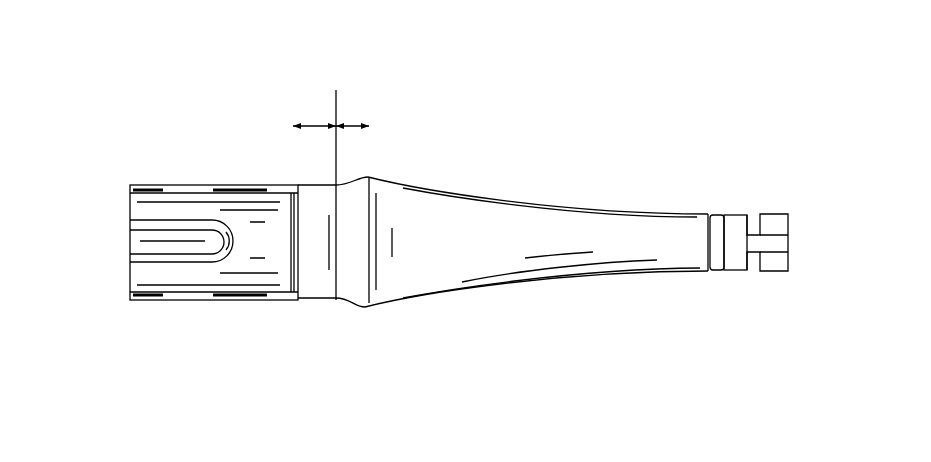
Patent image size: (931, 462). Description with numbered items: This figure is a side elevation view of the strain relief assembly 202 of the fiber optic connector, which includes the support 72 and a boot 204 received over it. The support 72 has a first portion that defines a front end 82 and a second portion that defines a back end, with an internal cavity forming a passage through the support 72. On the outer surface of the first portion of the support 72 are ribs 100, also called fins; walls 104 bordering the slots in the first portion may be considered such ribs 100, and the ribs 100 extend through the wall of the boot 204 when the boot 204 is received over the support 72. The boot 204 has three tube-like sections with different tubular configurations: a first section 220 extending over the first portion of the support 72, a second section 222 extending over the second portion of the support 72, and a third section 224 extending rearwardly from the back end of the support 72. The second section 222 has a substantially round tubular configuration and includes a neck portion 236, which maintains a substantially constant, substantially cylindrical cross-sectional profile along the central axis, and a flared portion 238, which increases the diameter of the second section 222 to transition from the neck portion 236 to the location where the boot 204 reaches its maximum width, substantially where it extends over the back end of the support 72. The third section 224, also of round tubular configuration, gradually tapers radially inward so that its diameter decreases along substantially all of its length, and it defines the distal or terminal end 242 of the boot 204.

The strain relief assembly 202 is at (677, 157).
The first section 220 is at (293, 185).
The second section 222 is at (369, 178).
The third section 224 is at (510, 202).
The boot 204 is at (535, 285).
The neck portion 236 is at (314, 287).
The flared portion 238 is at (353, 290).
The terminal end 242 is at (788, 260).
The front end 82 is at (130, 226).
The rib 100 is at (140, 258).
The wall 104 is at (181, 241).
The support 72 is at (172, 266).